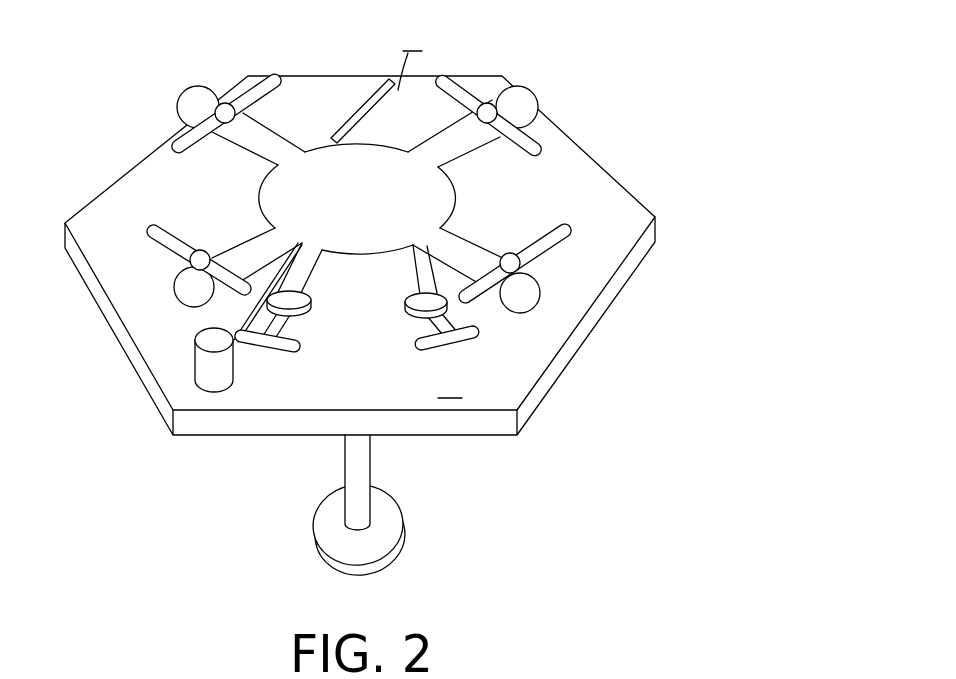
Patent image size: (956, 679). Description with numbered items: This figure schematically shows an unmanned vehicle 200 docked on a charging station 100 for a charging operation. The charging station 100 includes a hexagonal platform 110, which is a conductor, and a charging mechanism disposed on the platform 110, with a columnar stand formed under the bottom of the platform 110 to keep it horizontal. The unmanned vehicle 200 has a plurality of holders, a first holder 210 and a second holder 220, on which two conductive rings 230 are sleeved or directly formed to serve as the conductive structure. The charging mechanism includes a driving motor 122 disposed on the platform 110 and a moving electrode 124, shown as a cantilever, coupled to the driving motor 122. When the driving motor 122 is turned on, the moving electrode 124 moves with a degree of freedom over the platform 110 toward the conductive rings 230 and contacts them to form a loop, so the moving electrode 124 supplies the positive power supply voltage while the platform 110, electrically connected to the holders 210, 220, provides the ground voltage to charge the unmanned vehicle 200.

The charging station 100 is at (441, 299).
The platform 110 is at (593, 272).
The driving motor 122 is at (205, 368).
The moving electrode 124 is at (370, 107).
The unmanned vehicle 200 is at (528, 104).
The first holder 210 is at (303, 270).
The second holder 220 is at (453, 337).
The conductive rings 230 is at (278, 305).